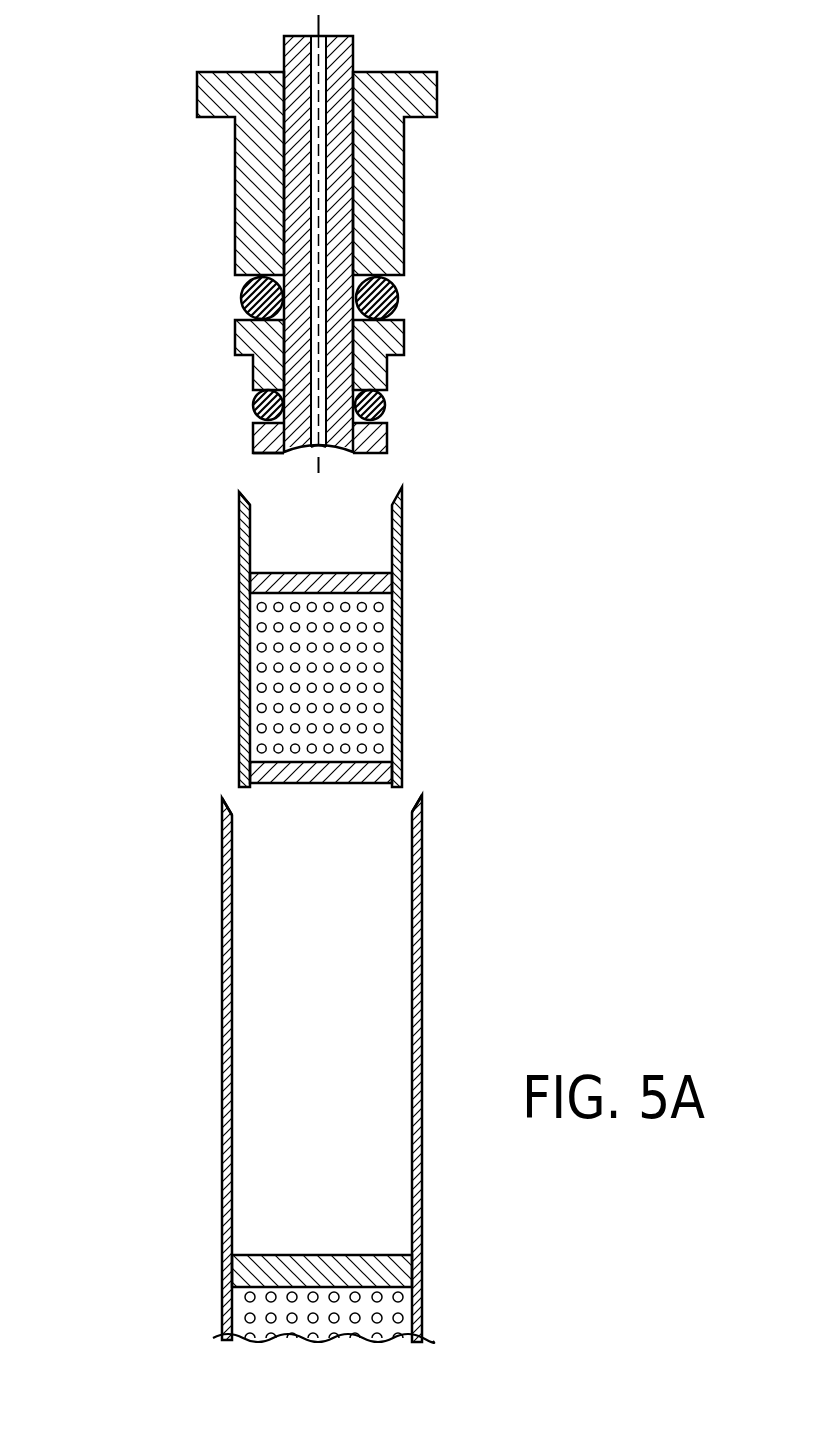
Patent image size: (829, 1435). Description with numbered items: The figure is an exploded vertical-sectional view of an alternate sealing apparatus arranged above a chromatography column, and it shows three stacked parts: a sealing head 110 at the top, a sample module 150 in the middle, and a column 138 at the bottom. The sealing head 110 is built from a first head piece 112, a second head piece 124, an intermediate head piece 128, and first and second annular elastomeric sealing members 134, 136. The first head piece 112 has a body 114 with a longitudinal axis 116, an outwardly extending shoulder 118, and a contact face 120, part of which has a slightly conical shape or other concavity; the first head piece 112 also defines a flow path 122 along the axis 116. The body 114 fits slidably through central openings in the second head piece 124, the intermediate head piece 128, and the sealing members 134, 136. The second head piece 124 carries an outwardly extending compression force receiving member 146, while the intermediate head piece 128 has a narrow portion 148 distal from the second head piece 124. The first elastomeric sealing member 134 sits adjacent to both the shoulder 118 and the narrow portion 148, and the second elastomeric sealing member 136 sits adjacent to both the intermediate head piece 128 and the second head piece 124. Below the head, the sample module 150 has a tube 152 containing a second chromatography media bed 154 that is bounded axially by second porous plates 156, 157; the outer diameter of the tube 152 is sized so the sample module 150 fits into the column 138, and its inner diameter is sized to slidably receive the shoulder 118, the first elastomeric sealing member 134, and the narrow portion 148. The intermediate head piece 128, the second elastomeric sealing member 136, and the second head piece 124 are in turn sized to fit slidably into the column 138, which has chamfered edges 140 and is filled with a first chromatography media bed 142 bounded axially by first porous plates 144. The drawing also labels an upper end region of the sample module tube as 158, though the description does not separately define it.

The sealing head 110 is at (142, 237).
The first head piece 112 is at (355, 200).
The body 114 is at (298, 157).
The longitudinal axis 116 is at (312, 19).
The outwardly extending shoulder 118 is at (377, 437).
The contact face 120 is at (270, 453).
The flow path 122 is at (317, 448).
The second head piece 124 is at (404, 175).
The intermediate head piece 128 is at (235, 338).
The first annular elastomeric sealing member 134 is at (387, 406).
The second annular elastomeric sealing member 136 is at (387, 299).
The column 138 is at (418, 960).
The chamfered edges 140 is at (422, 797).
The first chromatography media bed 142 is at (395, 1317).
The first porous plates 144 is at (380, 1267).
The compression force receiving member 146 is at (421, 93).
The narrow portion 148 is at (262, 370).
The sample module 150 is at (170, 634).
The tube 152 is at (402, 636).
The second chromatography media bed 154 is at (362, 688).
The second porous plate 156 is at (373, 583).
The second porous plate 157 is at (385, 773).
The cartridge upper end 158 is at (240, 493).